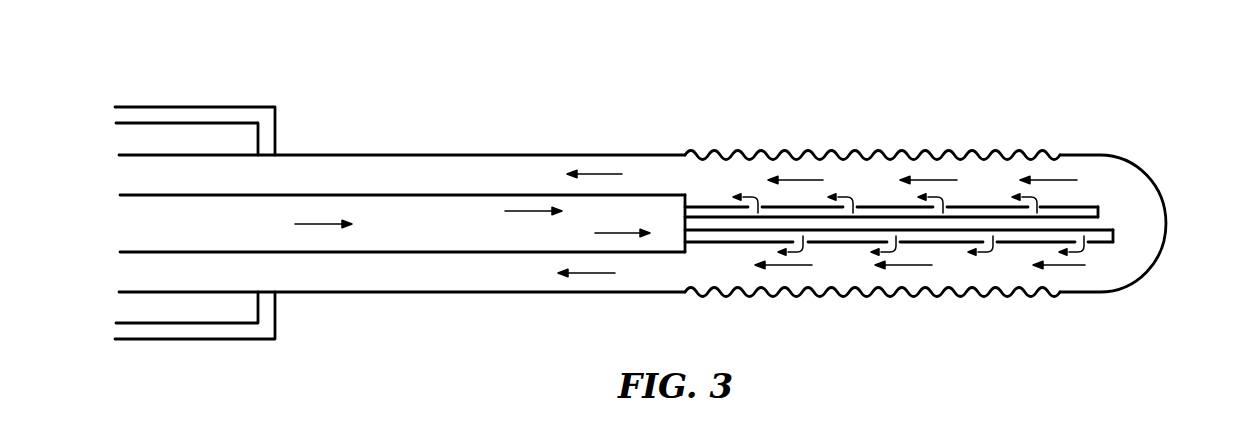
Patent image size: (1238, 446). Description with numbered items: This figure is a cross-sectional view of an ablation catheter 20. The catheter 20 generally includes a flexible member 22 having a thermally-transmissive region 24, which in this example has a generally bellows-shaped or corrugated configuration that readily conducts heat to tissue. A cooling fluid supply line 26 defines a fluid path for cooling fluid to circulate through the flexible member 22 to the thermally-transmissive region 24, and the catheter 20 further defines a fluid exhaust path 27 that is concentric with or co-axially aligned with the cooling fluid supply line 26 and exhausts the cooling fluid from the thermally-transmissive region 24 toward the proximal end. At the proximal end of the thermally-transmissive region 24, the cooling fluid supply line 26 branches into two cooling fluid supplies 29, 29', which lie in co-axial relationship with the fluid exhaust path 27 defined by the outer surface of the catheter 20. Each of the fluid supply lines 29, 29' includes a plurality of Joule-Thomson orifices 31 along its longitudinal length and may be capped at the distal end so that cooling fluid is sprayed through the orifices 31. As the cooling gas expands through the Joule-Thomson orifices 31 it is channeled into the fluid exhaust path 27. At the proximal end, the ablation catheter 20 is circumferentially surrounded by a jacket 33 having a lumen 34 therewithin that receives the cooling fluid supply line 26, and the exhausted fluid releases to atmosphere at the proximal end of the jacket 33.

The ablation catheter 20 is at (1089, 131).
The flexible member 22 is at (817, 127).
The thermally-transmissive region 24 is at (747, 150).
The cooling fluid supply line 26 is at (402, 223).
The fluid exhaust path 27 is at (758, 225).
The cooling fluid supply 29 is at (946, 202).
The cooling fluid supply 29' is at (948, 242).
The Joule-Thomson orifices 31 is at (849, 210).
The jacket 33 is at (228, 107).
The lumen 34 is at (160, 140).